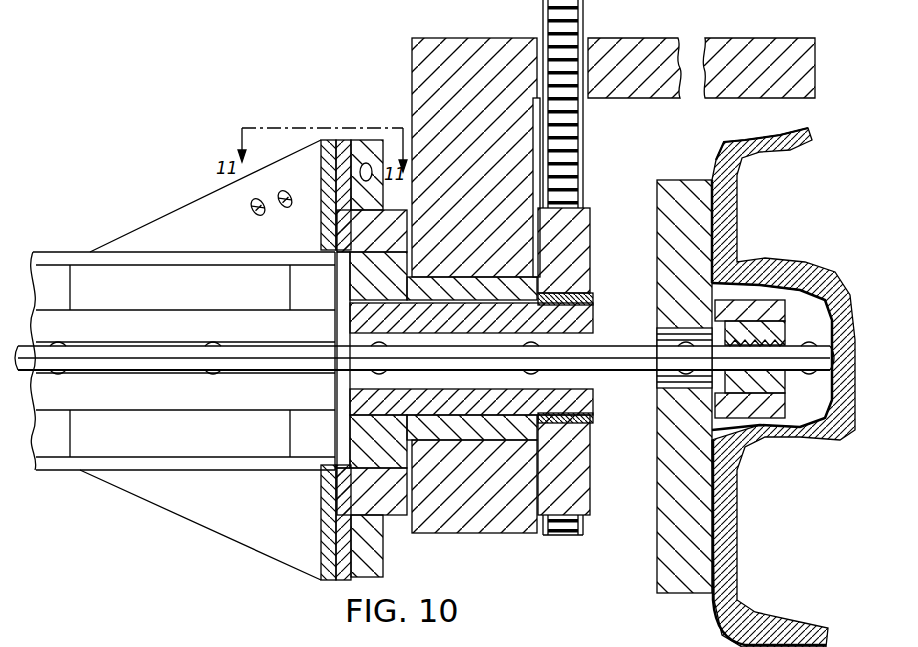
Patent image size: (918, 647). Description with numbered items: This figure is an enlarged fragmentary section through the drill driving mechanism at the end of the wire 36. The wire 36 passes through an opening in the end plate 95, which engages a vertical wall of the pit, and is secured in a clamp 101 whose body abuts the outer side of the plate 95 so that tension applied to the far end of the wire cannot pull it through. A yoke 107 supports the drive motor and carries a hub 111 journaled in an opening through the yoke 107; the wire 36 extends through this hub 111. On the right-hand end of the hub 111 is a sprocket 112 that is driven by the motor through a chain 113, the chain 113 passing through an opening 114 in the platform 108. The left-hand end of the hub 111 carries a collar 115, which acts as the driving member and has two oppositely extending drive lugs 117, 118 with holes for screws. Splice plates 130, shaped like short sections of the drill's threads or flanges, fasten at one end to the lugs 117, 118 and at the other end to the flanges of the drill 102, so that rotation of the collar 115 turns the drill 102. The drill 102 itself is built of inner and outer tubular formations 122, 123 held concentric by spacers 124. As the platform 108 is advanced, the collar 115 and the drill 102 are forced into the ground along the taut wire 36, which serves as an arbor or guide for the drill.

The wire 36 is at (604, 345).
The end plate 95 is at (658, 527).
The clamp 101 is at (818, 330).
The drill 102 is at (138, 473).
The yoke 107 is at (478, 40).
The platform 108 is at (766, 40).
The hub 111 is at (595, 312).
The sprocket 112 is at (593, 450).
The chain 113 is at (574, 128).
The opening 114 is at (589, 44).
The collar 115 is at (350, 234).
The drive lug 117 is at (345, 150).
The drive lug 118 is at (340, 578).
The inner tubular formation 122 is at (259, 309).
The outer tubular formation 123 is at (185, 476).
The spacer 124 is at (68, 434).
The splice plate 130 is at (364, 152).